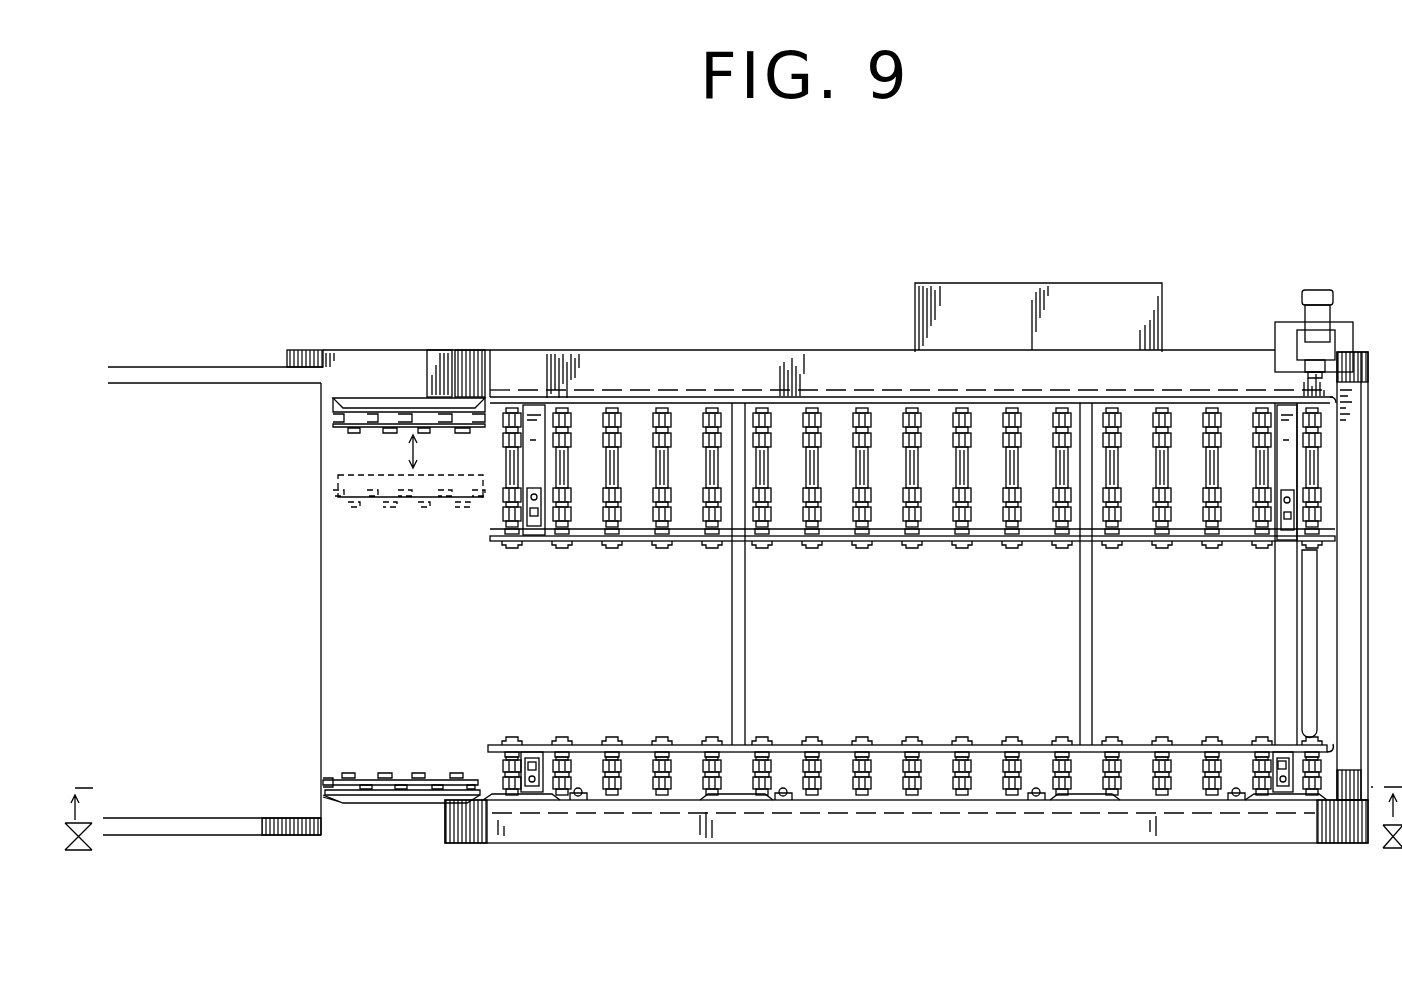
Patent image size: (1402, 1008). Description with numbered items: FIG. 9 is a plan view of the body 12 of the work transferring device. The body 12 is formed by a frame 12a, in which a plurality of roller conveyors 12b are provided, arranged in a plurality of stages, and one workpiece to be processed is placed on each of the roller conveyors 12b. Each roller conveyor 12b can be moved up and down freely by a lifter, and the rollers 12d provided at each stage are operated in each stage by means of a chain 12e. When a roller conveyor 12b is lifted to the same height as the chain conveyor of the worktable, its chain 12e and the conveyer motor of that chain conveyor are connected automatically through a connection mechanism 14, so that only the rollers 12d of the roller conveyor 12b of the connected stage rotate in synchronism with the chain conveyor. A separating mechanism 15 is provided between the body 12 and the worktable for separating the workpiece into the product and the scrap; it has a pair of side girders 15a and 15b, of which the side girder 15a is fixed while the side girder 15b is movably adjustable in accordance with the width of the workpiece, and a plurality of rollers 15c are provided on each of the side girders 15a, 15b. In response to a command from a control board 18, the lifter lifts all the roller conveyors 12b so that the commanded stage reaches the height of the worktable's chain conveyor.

The body 12 is at (717, 342).
The frame 12a is at (541, 350).
The roller conveyor 12b is at (752, 382).
The roller 12d is at (911, 466).
The chain 12e is at (606, 392).
The connection mechanism 14 is at (333, 365).
The separating mechanism 15 is at (354, 818).
The side girder 15a is at (393, 797).
The side girder 15b is at (410, 395).
The roller 15c is at (390, 432).
The control board 18 is at (1078, 300).